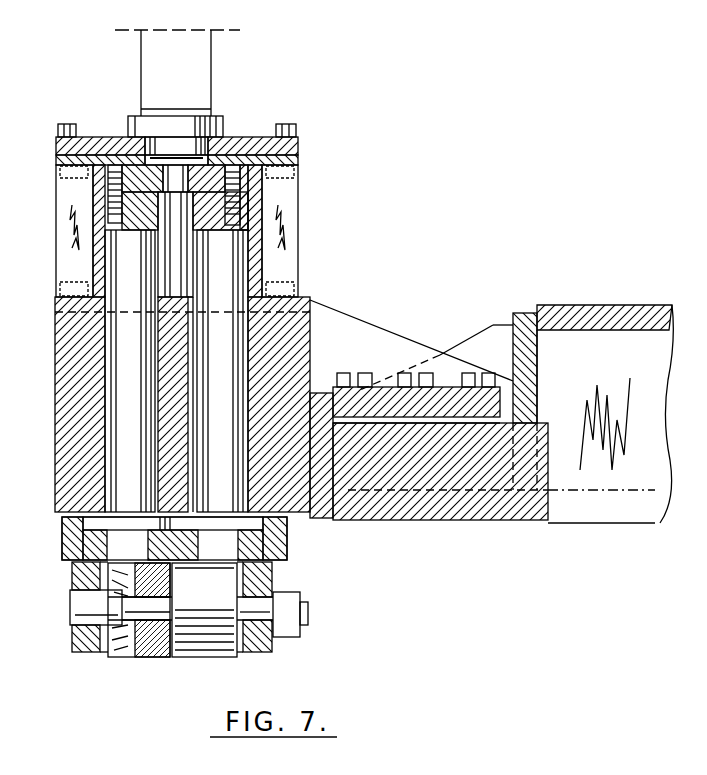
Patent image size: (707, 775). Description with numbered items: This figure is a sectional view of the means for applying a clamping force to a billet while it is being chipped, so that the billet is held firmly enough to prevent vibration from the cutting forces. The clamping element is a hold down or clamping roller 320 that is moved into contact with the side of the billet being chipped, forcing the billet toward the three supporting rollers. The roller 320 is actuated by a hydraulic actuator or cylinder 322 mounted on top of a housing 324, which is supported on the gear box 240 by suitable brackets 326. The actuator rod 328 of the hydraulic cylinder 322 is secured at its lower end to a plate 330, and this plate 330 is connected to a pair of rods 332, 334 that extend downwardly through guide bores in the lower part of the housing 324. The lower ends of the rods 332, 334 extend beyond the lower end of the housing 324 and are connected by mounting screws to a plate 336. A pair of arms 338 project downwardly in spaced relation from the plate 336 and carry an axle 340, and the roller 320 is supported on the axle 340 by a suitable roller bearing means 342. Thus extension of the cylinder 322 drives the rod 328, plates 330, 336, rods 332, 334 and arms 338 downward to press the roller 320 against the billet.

The gear box 240 is at (602, 312).
The clamping roller 320 is at (202, 658).
The hydraulic cylinder 322 is at (213, 56).
The housing 324 is at (307, 300).
The brackets 326 is at (467, 343).
The actuator rod 328 is at (163, 155).
The plate 330 is at (215, 157).
The rod 332 is at (120, 238).
The rod 334 is at (233, 247).
The plate 336 is at (287, 538).
The arms 338 is at (72, 640).
The axle 340 is at (80, 603).
The roller bearing means 342 is at (147, 657).